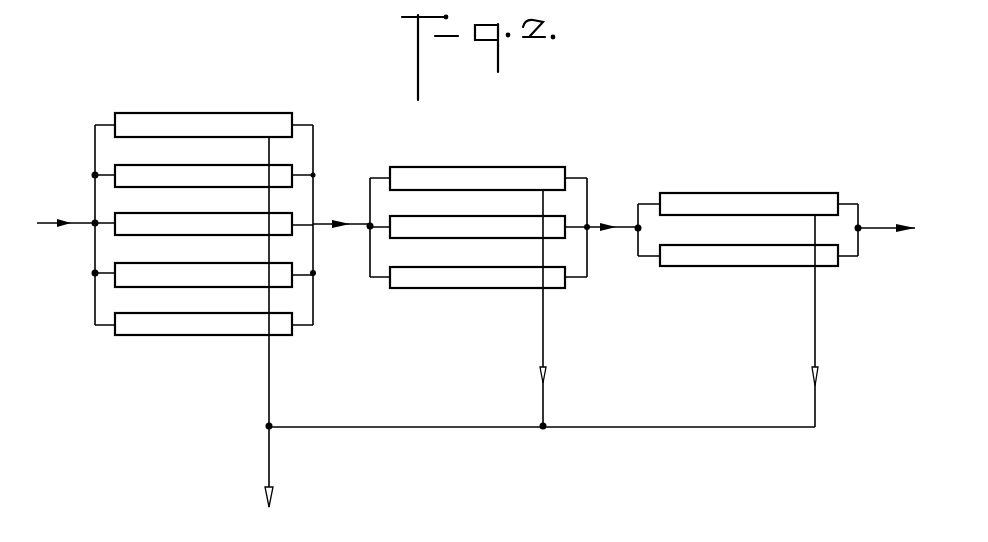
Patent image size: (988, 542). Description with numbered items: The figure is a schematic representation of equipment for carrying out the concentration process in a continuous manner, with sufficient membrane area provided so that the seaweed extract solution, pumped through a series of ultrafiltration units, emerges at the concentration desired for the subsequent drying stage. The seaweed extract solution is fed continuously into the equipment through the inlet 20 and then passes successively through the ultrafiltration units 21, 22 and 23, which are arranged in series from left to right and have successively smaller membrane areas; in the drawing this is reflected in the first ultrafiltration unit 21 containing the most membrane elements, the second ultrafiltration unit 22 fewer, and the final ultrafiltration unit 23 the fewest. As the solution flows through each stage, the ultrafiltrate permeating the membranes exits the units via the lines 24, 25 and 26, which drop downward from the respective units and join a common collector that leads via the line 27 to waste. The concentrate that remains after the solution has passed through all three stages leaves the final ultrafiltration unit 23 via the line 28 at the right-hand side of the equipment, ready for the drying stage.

The inlet 20 is at (50, 218).
The ultrafiltration unit 21 is at (233, 110).
The ultrafiltration unit 22 is at (505, 166).
The ultrafiltration unit 23 is at (783, 194).
The line 24 is at (269, 366).
The line 25 is at (545, 398).
The line 26 is at (815, 341).
The line 27 is at (269, 465).
The line 28 is at (877, 228).